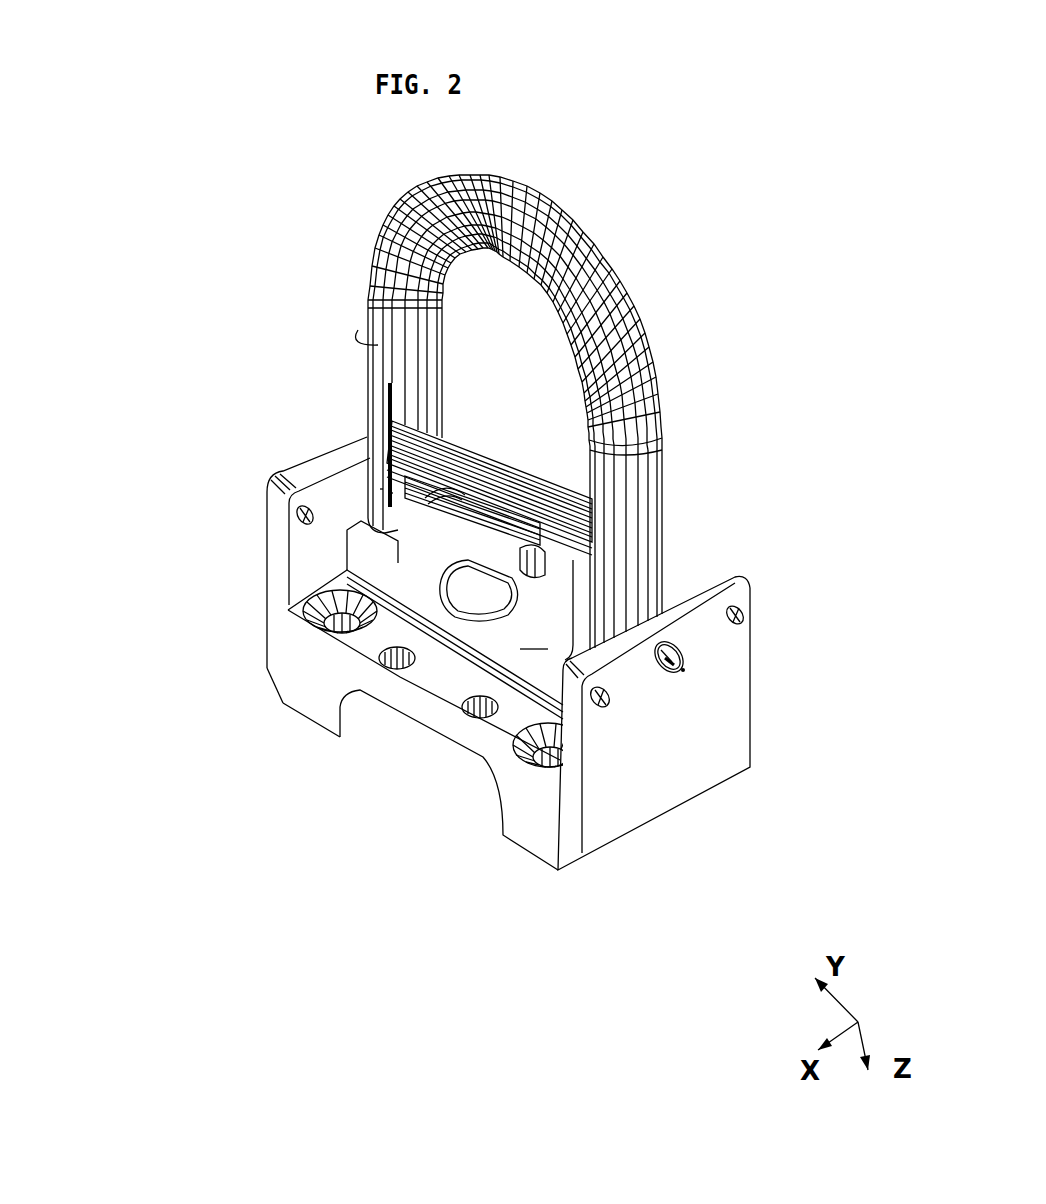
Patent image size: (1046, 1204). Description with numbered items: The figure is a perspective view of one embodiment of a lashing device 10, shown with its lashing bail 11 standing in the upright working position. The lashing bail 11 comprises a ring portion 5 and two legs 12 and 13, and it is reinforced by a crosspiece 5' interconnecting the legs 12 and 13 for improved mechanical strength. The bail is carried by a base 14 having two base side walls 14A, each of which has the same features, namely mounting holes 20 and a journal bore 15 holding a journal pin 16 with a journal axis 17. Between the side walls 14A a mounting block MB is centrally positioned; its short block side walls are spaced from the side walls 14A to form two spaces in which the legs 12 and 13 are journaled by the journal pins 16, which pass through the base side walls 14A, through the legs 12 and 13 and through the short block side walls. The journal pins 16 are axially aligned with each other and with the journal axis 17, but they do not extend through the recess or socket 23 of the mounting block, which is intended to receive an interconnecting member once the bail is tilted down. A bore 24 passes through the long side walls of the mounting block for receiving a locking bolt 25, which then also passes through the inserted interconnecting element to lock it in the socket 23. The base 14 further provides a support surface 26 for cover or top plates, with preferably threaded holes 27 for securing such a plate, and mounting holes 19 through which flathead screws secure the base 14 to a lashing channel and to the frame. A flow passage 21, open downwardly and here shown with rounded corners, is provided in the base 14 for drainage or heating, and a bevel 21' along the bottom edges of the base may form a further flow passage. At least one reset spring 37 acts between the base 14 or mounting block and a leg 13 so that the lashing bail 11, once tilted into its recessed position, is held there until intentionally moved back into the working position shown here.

The ring portion 5 is at (509, 391).
The crosspiece 5' is at (489, 468).
The lashing device 10 is at (727, 130).
The lashing bail 11 is at (617, 236).
The leg 12 is at (562, 640).
The leg 13 is at (390, 493).
The base 14 is at (522, 880).
The base side wall 14A is at (268, 505).
The journal bore 15 is at (683, 655).
The journal pin 16 is at (672, 670).
The journal axis 17 is at (693, 678).
The mounting hole 19 is at (340, 626).
The mounting hole 20 is at (305, 514).
The flow passage 21 is at (286, 811).
The bevel 21' is at (262, 702).
The recess or socket 23 is at (380, 489).
The bore 24 is at (545, 560).
The locking bolt 25 is at (500, 597).
The support surface 26 is at (448, 685).
The hole 27 is at (483, 710).
The reset spring 37 is at (385, 460).